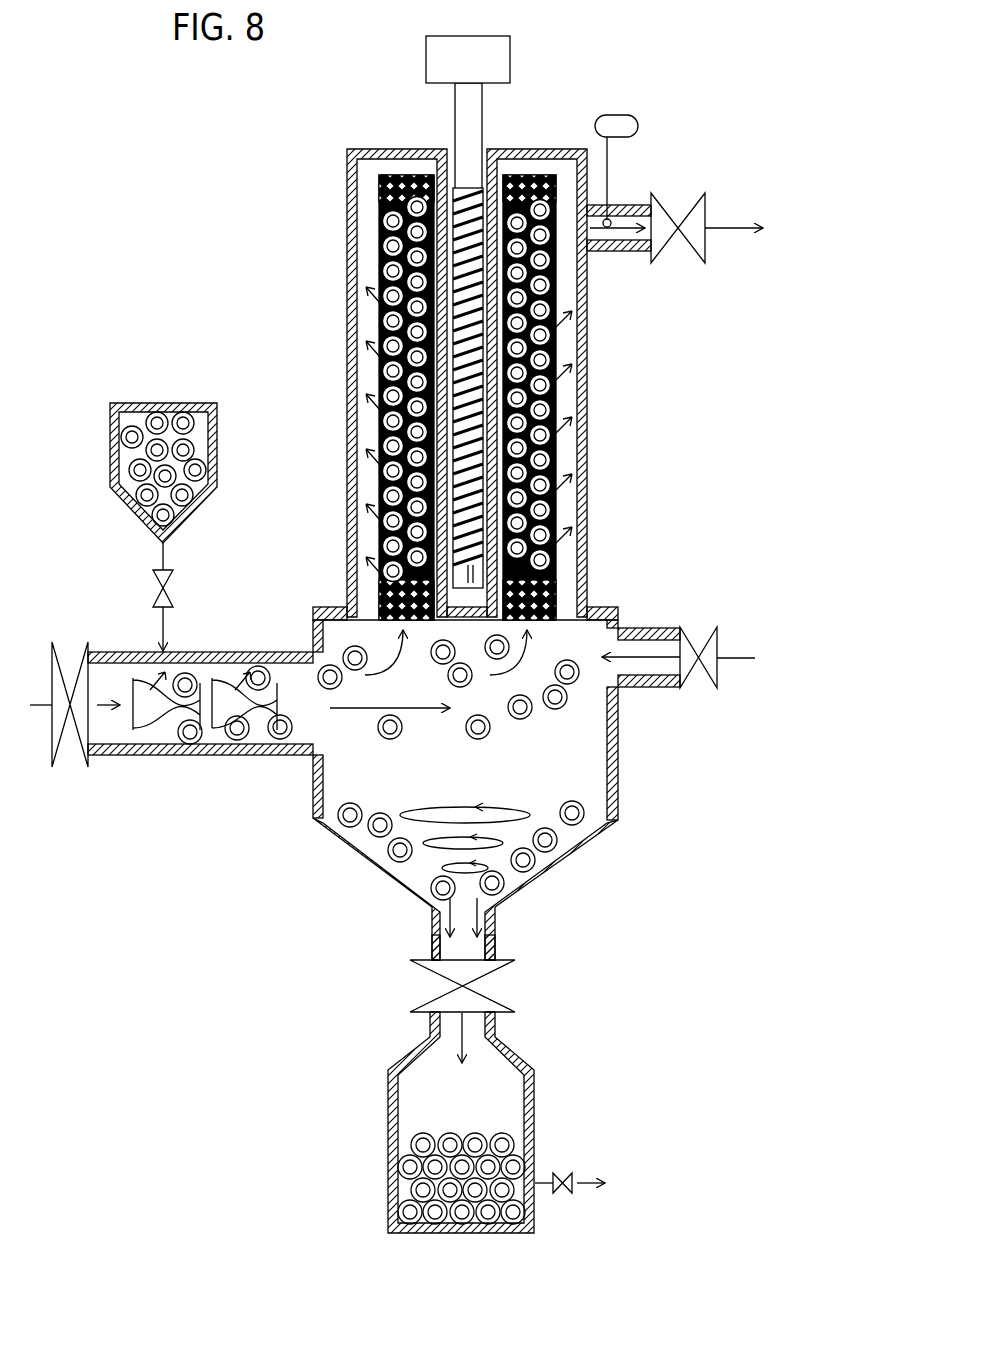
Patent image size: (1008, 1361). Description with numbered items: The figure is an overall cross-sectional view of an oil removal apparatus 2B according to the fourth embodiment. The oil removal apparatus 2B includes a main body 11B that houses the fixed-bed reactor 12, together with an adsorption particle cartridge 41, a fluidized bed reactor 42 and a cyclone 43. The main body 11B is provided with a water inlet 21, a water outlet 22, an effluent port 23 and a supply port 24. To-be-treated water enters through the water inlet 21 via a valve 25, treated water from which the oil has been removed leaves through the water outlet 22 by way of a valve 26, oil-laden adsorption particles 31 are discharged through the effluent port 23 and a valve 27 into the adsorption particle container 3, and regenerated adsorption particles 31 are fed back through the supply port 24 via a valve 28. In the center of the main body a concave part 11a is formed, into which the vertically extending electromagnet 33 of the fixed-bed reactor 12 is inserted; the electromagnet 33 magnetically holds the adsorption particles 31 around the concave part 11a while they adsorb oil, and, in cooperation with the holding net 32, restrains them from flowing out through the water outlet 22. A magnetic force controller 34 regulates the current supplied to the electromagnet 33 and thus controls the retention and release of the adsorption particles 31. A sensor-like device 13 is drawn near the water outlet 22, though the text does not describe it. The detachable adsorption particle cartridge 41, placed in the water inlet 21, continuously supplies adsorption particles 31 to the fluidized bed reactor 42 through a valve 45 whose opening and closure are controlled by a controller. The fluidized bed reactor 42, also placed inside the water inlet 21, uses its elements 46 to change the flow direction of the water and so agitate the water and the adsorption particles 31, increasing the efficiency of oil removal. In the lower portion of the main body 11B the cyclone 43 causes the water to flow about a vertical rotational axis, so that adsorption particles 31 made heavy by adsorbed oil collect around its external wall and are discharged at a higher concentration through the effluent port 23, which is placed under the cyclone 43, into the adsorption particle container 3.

The oil removal apparatus 2B is at (748, 132).
The adsorption particle container 3 is at (535, 1100).
The concave part 11a is at (462, 160).
The main body 11B is at (580, 547).
The fixed-bed reactor 12 is at (372, 541).
The pressure sensor 13 is at (638, 122).
The water inlet 21 is at (270, 755).
The water outlet 22 is at (615, 252).
The effluent port 23 is at (495, 928).
The supply port 24 is at (655, 628).
The valve 25 is at (53, 747).
The valve 26 is at (705, 245).
The valve 27 is at (510, 1007).
The valve 28 is at (717, 637).
The adsorption particles 31 is at (380, 240).
The holding net 32 is at (387, 177).
The electromagnet 33 is at (470, 202).
The magnetic force controller 34 is at (510, 72).
The adsorption particle cartridge 41 is at (167, 403).
The fluidized bed reactor 42 is at (197, 743).
The cyclone 43 is at (553, 867).
The valve 45 is at (172, 580).
The elements 46 is at (222, 703).